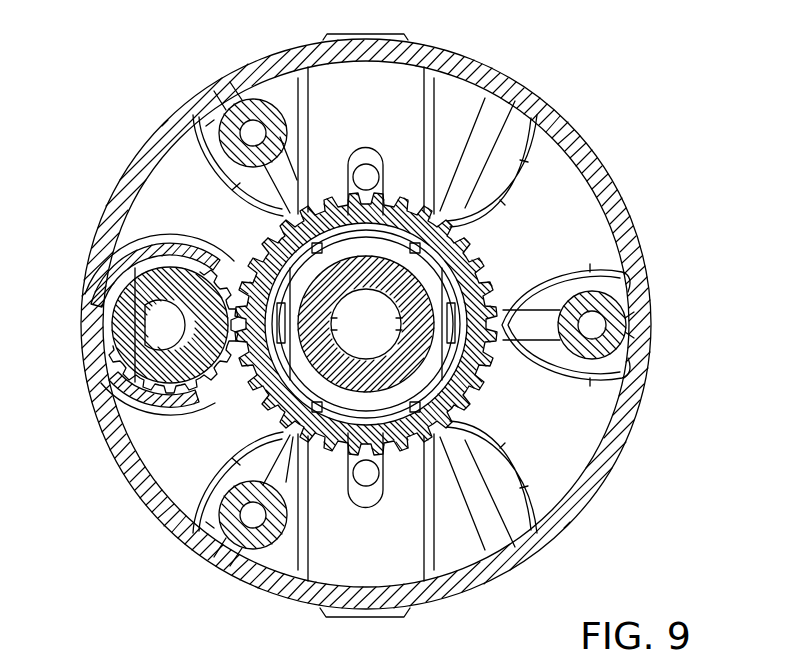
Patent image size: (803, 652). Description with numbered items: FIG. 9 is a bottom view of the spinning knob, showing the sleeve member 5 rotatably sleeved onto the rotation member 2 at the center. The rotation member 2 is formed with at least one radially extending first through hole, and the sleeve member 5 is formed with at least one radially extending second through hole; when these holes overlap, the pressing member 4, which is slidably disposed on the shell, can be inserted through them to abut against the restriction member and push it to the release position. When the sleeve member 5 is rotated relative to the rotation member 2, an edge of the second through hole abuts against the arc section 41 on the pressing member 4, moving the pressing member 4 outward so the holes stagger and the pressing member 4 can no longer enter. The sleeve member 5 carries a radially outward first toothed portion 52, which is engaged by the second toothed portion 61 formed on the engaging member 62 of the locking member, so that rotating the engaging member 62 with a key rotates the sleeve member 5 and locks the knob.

The rotation member 2 is at (413, 290).
The pressing member 4 is at (413, 117).
The arc section 41 is at (470, 236).
The sleeve member 5 is at (283, 220).
The first toothed portion 52 is at (253, 260).
The second toothed portion 61 is at (185, 405).
The engaging member 62 is at (160, 283).